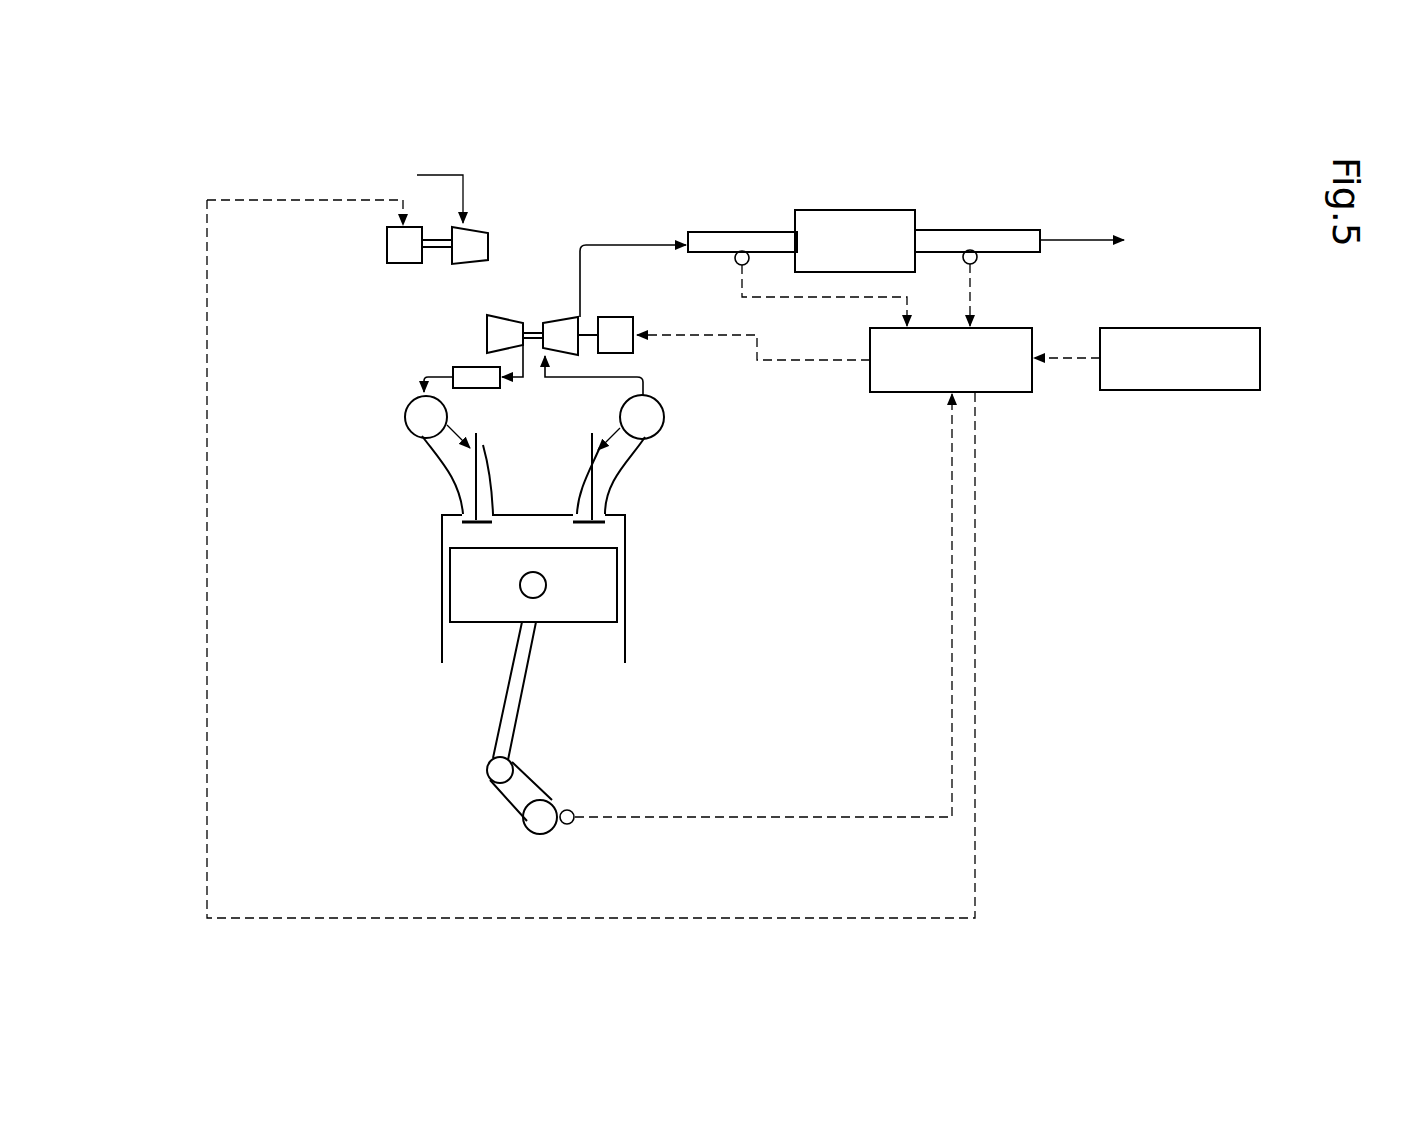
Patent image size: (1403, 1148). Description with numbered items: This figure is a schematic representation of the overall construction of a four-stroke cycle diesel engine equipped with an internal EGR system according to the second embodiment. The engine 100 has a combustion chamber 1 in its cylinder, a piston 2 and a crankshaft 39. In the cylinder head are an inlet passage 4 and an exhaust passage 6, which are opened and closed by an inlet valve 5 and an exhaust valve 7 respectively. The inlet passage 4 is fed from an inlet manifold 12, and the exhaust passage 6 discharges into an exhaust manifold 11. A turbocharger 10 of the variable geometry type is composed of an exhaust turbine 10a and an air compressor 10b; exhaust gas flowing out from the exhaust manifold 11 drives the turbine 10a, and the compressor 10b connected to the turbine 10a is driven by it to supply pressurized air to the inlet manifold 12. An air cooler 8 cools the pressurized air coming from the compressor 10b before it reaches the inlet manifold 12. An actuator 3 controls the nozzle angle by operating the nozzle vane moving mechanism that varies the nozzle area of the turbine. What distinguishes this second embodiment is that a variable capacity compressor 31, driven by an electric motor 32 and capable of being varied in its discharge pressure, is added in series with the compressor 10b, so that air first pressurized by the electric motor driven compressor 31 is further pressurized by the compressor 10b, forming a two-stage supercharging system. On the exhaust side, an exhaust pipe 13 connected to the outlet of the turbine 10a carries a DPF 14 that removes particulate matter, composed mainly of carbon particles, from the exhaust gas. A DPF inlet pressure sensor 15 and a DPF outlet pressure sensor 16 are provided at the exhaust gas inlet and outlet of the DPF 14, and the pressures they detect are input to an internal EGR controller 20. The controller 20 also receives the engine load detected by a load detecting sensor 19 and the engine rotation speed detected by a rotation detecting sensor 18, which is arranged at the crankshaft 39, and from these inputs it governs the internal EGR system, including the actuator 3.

The combustion chamber 1 is at (470, 540).
The piston 2 is at (605, 590).
The actuator 3 is at (617, 317).
The inlet passage 4 is at (453, 453).
The inlet valve 5 is at (470, 522).
The exhaust passage 6 is at (610, 462).
The exhaust valve 7 is at (597, 521).
The air cooler 8 is at (467, 368).
The turbocharger 10 is at (488, 216).
The exhaust turbine 10a is at (572, 317).
The air compressor 10b is at (487, 320).
The exhaust manifold 11 is at (652, 424).
The inlet manifold 12 is at (403, 417).
The exhaust pipe 13 is at (713, 232).
The DPF (diesel particulate filter) 14 is at (890, 210).
The DPF inlet pressure sensor 15 is at (735, 262).
The DPF outlet pressure sensor 16 is at (977, 260).
The rotation detecting sensor 18 is at (571, 809).
The load detecting sensor 19 is at (1192, 390).
The internal EGR controller 20 is at (988, 393).
The variable capacity compressor 31 is at (480, 227).
The electric motor 32 is at (420, 227).
The crankshaft 39 is at (527, 834).
The engine 100 is at (642, 647).